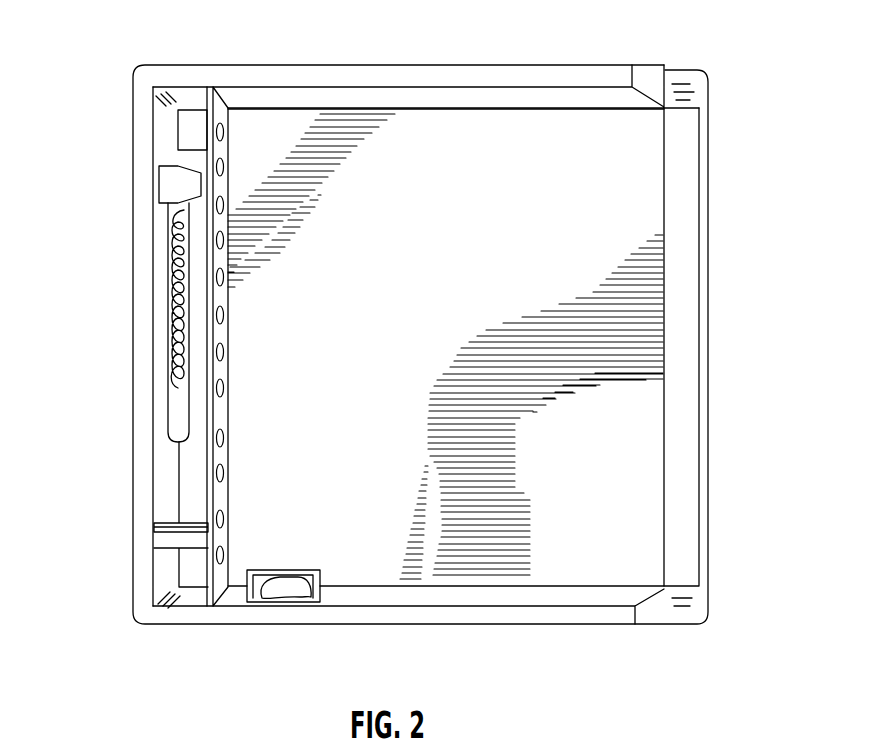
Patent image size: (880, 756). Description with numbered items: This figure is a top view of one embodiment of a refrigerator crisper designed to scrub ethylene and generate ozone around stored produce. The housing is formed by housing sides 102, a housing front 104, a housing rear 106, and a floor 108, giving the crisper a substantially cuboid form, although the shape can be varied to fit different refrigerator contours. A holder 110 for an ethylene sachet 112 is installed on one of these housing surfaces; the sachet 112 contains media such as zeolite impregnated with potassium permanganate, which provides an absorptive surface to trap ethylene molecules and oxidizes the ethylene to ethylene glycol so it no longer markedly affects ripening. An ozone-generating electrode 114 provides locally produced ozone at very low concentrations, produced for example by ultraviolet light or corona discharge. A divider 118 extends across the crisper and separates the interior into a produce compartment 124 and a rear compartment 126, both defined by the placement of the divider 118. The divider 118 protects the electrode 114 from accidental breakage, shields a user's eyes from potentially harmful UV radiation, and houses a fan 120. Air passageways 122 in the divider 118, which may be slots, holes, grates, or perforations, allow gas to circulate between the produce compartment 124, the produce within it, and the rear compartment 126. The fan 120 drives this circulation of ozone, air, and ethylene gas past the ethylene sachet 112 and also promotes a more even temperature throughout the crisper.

The housing sides 102 is at (562, 102).
The housing front 104 is at (690, 477).
The housing rear 106 is at (170, 158).
The floor 108 is at (415, 170).
The holder 110 is at (300, 597).
The ethylene sachet 112 is at (247, 600).
The ozone-generating electrode 114 is at (182, 325).
The divider 118 is at (224, 412).
The fan 120 is at (176, 527).
The air passageways 122 is at (224, 383).
The produce compartment 124 is at (405, 254).
The rear compartment 126 is at (192, 131).